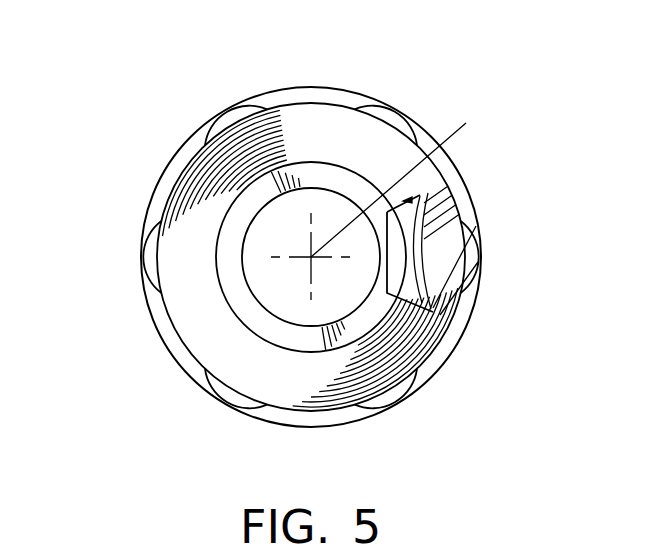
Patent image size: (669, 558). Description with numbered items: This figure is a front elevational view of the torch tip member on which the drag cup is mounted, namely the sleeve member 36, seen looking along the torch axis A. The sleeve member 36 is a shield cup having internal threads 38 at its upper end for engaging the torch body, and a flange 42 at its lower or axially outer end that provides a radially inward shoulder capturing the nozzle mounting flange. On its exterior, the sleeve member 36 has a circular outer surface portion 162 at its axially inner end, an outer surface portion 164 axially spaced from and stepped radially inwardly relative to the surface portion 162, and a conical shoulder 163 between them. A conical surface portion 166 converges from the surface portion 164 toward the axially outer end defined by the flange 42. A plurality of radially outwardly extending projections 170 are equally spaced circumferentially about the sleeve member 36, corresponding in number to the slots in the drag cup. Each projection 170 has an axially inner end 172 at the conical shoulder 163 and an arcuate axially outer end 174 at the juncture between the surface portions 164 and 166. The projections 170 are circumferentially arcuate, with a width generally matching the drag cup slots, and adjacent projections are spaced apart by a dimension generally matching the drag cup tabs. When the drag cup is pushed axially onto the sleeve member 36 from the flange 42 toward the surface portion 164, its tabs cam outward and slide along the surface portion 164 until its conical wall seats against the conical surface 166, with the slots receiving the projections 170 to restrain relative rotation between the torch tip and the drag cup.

The sleeve member 36 is at (116, 372).
The internal threads 38 is at (433, 248).
The flange 42 is at (233, 293).
The circular outer surface portion 162 is at (470, 317).
The conical shoulder 163 is at (442, 345).
The outer surface portion 164 is at (177, 180).
The conical surface portion 166 is at (205, 332).
The projections 170 is at (241, 96).
The axially inner end 172 is at (477, 268).
The arcuate axially outer end 174 is at (388, 132).
The axis A is at (398, 184).